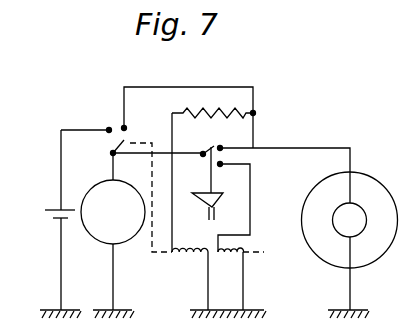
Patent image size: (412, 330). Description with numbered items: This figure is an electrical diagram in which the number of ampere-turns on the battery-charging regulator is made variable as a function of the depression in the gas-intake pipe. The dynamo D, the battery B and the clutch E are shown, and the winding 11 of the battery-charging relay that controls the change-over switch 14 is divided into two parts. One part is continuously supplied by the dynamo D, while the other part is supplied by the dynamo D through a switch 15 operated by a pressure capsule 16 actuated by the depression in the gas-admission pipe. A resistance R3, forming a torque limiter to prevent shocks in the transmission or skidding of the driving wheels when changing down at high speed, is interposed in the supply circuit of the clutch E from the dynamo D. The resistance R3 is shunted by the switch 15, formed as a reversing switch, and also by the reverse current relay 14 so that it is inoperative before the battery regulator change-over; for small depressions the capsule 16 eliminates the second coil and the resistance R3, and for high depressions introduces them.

The change-over switch 14 is at (111, 144).
The switch 15 is at (207, 158).
The pressure capsule 16 is at (220, 195).
The winding of the battery-charging relay 11 is at (188, 257).
The resistance R3 is at (214, 106).
The battery B is at (56, 214).
The dynamo D is at (97, 238).
The clutch E is at (377, 252).